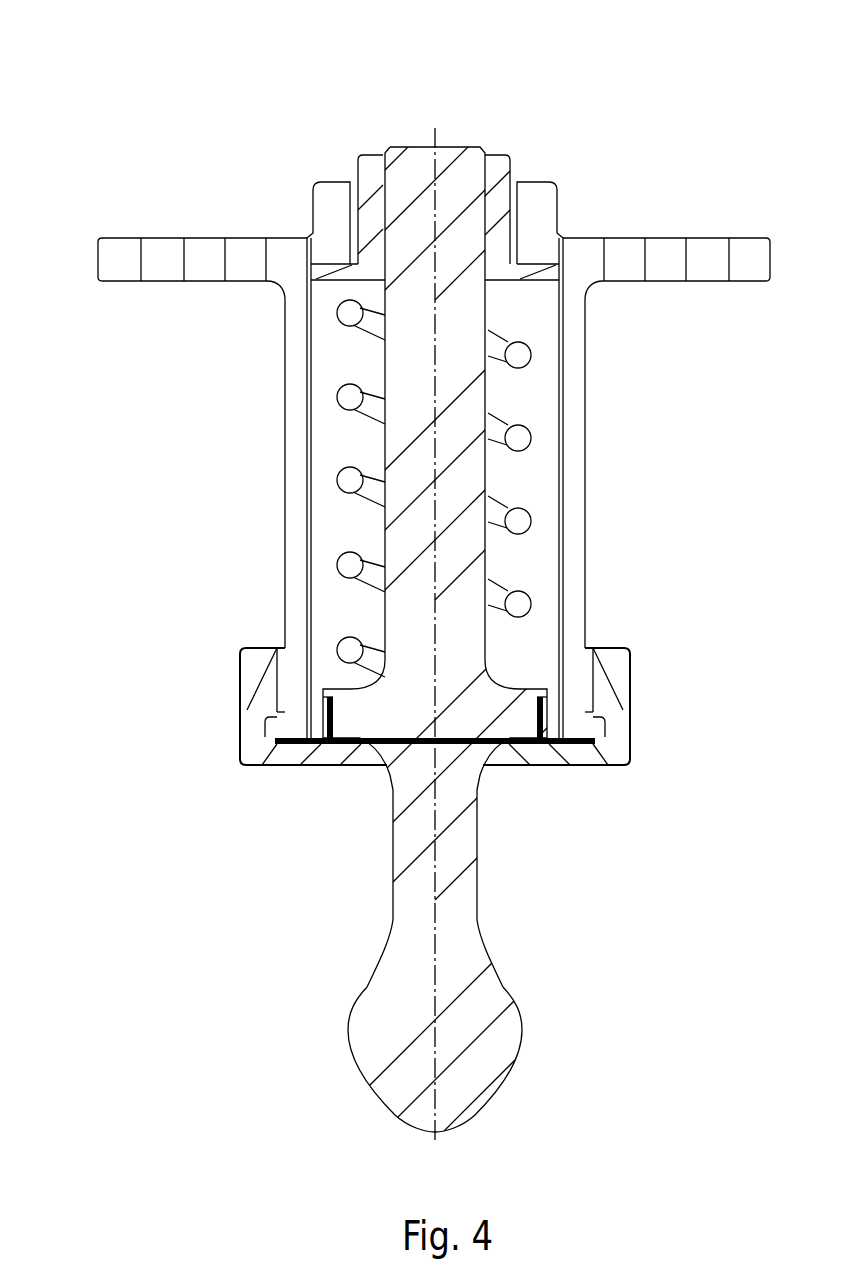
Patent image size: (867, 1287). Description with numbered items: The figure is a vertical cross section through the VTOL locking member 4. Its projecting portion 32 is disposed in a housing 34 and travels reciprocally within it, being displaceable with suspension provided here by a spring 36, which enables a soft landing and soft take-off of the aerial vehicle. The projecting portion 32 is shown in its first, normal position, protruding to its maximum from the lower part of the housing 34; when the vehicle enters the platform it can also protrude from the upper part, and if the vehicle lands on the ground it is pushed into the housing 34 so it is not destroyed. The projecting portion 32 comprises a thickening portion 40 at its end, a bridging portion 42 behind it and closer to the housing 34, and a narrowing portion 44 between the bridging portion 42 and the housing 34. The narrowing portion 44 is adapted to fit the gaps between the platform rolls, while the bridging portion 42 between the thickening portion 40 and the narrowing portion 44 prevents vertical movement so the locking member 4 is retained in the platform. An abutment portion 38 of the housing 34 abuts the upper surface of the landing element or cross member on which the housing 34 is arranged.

The VTOL locking member 4 is at (508, 98).
The projecting portion 32 is at (465, 820).
The housing 34 is at (578, 525).
The spring 36 is at (527, 433).
The abutment portion 38 is at (210, 282).
The thickening portion 40 is at (528, 1005).
The bridging portion 42 is at (508, 963).
The narrowing portion 44 is at (492, 882).